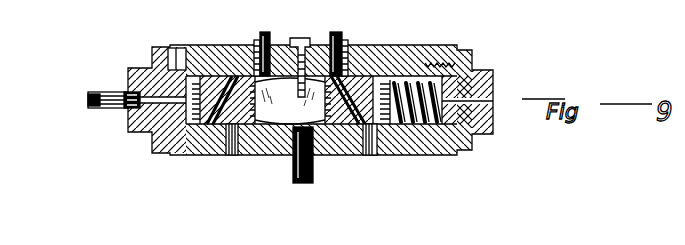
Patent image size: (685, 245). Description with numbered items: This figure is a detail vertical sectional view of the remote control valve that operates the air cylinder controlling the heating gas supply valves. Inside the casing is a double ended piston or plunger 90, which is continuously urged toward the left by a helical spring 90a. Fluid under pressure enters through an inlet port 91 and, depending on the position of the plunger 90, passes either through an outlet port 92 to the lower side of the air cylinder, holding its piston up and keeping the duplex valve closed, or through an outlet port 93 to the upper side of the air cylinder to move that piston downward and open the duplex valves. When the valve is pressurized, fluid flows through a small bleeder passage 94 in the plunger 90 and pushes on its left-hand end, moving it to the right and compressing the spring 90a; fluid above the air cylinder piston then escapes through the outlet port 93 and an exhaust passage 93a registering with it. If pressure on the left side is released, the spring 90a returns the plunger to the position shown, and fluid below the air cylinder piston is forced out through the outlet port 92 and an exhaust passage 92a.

The double ended piston or plunger 90 is at (377, 80).
The helical spring 90a is at (418, 65).
The inlet port 91 is at (281, 153).
The outlet port 92 is at (344, 52).
The exhaust passage 92a is at (346, 154).
The outlet port 93 is at (263, 32).
The exhaust passage 93a is at (218, 153).
The bleeder passage 94 is at (214, 48).